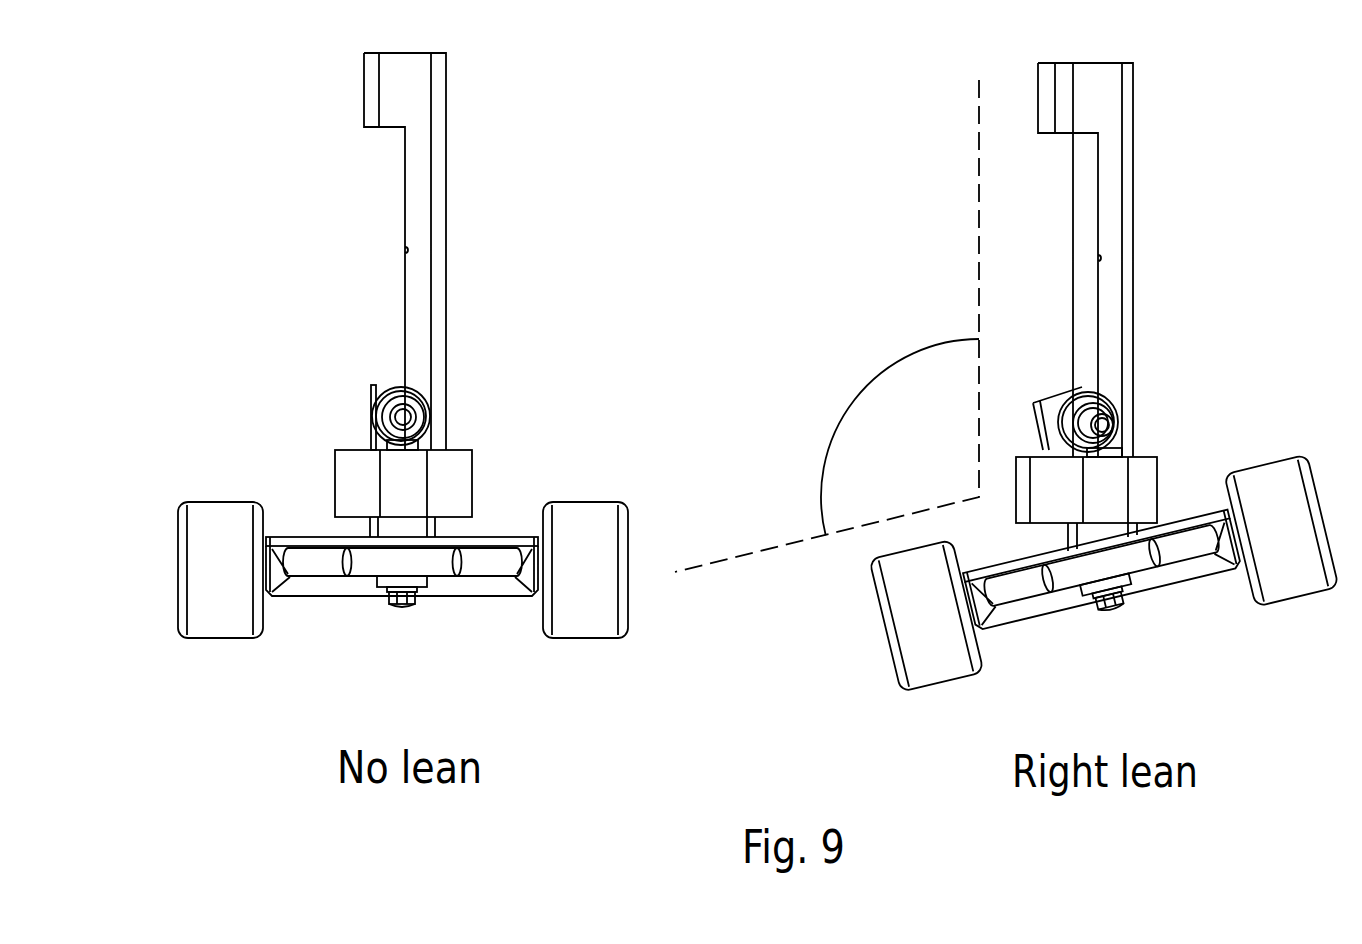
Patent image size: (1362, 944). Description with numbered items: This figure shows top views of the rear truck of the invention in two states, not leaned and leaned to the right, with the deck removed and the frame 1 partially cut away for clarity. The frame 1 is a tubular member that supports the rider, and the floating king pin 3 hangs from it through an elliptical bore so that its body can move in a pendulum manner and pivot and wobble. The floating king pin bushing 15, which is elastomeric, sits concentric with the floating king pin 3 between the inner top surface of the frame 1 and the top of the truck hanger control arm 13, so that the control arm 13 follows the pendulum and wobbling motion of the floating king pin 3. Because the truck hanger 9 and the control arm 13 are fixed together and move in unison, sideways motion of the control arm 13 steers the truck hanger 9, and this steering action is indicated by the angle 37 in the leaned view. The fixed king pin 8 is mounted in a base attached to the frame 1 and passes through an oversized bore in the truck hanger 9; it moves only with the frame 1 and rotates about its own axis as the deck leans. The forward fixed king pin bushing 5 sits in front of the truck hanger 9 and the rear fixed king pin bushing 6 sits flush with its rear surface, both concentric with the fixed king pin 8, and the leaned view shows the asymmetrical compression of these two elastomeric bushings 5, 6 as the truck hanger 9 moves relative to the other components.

The frame 1 is at (418, 233).
The floating king pin 3 is at (410, 412).
The forward fixed king pin bushing 5 is at (412, 530).
The rear fixed king pin bushing 6 is at (427, 587).
The fixed king pin 8 is at (427, 440).
The truck hanger 9 is at (344, 587).
The truck hanger control arm 13 is at (372, 384).
The floating king pin bushing 15 is at (386, 387).
The angle 37 is at (827, 326).